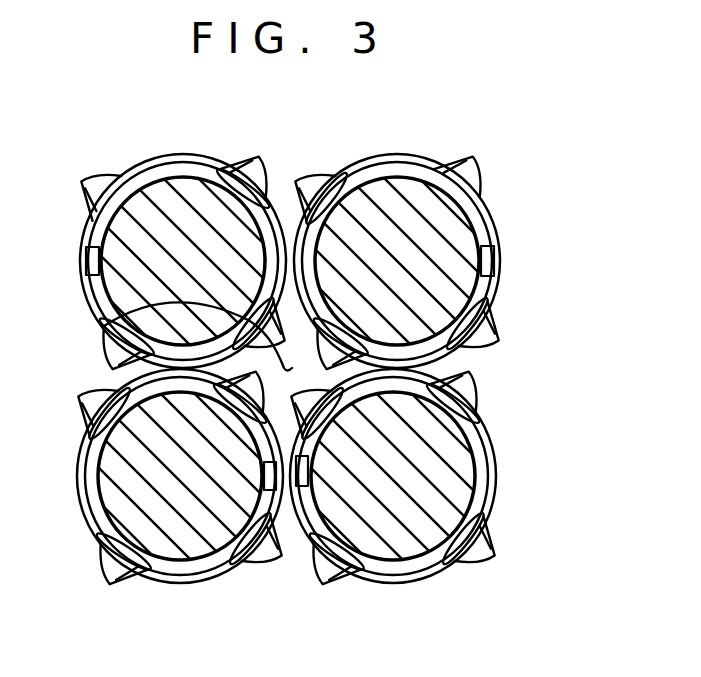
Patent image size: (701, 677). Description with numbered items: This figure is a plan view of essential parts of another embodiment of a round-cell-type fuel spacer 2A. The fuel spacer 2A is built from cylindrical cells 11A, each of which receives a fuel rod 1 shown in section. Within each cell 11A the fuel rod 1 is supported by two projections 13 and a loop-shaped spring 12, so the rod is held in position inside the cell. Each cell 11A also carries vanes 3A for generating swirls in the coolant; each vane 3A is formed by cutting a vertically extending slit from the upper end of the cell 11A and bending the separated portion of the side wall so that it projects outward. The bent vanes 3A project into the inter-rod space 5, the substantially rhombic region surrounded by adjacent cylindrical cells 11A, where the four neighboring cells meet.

The fuel rod 1 is at (455, 289).
The fuel spacer 2A is at (396, 152).
The cylindrical cell 11A is at (503, 231).
The projection 13 is at (322, 206).
The loop-shaped spring 12 is at (305, 530).
The vane 3A is at (468, 396).
The inter-rod space 5 is at (104, 326).